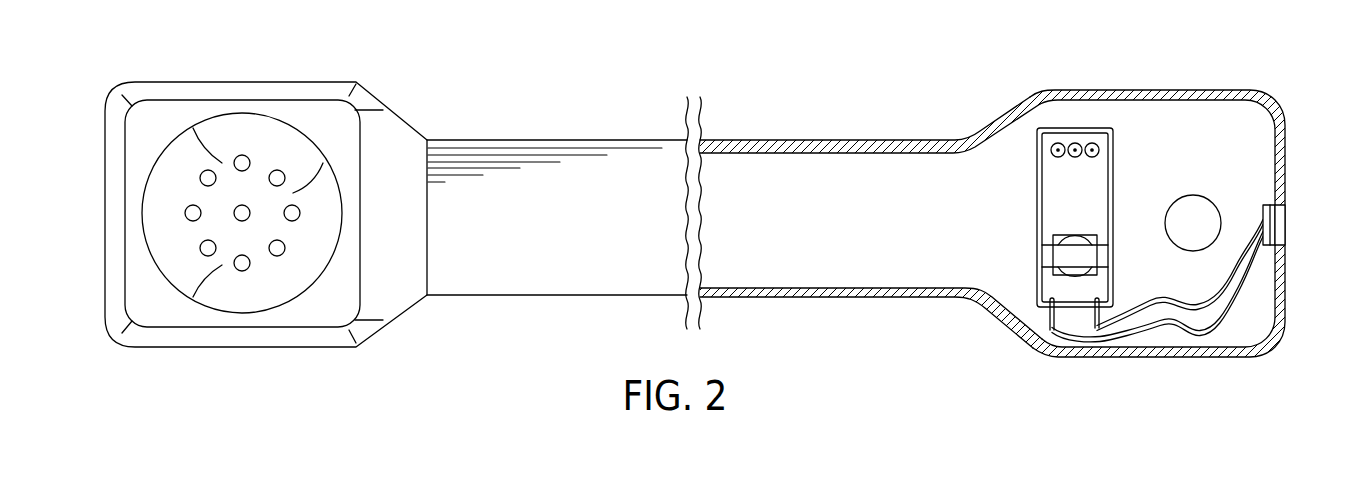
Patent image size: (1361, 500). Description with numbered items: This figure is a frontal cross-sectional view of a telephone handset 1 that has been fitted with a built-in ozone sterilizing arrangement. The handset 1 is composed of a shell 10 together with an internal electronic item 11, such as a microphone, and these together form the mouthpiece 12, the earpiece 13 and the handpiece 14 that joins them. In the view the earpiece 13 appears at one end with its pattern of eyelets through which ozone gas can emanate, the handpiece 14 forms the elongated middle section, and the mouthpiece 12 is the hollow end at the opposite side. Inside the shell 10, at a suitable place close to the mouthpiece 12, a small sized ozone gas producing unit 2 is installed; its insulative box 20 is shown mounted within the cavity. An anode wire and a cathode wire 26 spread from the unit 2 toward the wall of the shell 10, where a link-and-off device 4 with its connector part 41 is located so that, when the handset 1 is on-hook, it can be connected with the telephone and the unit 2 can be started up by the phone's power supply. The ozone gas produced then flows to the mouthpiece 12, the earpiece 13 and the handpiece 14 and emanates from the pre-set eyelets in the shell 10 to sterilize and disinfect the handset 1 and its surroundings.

The handset 1 is at (779, 105).
The shell 10 is at (863, 147).
The internal electronic item 11 is at (1193, 223).
The mouthpiece 12 is at (1106, 93).
The earpiece 13 is at (242, 130).
The handpiece 14 is at (568, 140).
The ozone gas producing unit 2 is at (1116, 152).
The insulative box 20 is at (1038, 260).
The anode wire and cathode wire 26 is at (1050, 333).
The link-and-off device 4 is at (1297, 229).
The socket 41 is at (1278, 223).